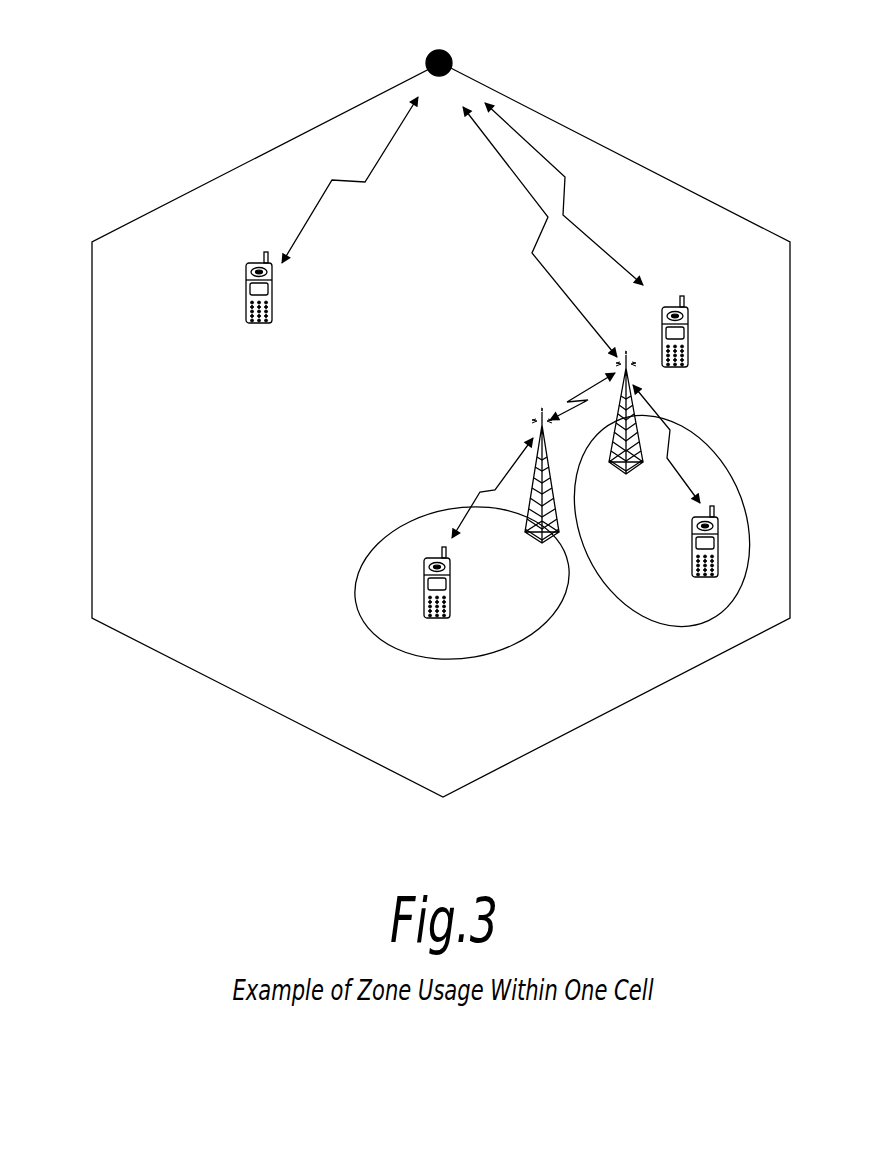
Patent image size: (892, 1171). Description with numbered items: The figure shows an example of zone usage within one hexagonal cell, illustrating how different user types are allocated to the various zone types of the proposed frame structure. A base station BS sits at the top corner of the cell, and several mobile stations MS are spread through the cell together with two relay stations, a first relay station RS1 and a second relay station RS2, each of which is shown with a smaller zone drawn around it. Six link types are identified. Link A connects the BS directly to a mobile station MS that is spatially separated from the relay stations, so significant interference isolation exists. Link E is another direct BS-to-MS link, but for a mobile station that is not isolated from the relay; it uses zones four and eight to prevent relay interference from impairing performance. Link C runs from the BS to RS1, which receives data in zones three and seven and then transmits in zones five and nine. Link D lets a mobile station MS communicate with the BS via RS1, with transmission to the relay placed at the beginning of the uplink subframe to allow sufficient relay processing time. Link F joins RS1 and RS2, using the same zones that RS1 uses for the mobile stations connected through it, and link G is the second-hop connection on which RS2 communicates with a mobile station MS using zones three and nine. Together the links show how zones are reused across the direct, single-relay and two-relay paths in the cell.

The base station BS is at (440, 45).
The mobile station MS is at (481, 453).
The first relay station RS1 is at (630, 431).
The second relay station RS2 is at (540, 493).
The link A is at (350, 180).
The link C is at (540, 232).
The link D is at (675, 444).
The link E is at (567, 194).
The link F is at (582, 385).
The link G is at (492, 488).